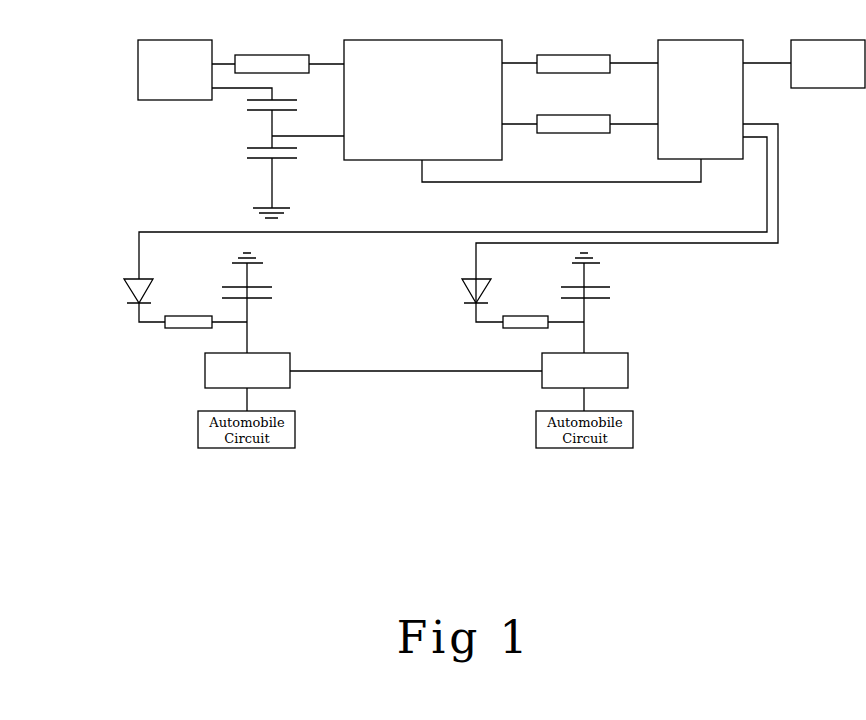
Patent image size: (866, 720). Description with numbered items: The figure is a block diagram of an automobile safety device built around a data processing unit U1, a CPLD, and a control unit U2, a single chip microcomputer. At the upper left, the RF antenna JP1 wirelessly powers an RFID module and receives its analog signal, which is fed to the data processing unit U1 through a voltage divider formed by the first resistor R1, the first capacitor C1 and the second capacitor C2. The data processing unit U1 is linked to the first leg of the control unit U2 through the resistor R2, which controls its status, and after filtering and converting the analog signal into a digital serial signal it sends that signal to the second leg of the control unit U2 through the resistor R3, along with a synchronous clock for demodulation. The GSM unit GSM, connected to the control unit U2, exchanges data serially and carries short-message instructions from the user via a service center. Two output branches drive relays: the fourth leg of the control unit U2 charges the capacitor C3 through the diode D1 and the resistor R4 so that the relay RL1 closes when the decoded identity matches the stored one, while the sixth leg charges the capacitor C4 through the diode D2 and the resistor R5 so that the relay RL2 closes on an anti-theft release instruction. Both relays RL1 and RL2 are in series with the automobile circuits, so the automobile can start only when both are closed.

The RF antenna JP1 is at (175, 70).
The first resistor R1 is at (272, 55).
The first capacitor C1 is at (284, 108).
The second capacitor C2 is at (284, 157).
The data processing unit U1 is at (423, 100).
The resistor R2 is at (573, 55).
The resistor R3 is at (573, 115).
The control unit U2 is at (700, 99).
The GSM unit GSM is at (828, 64).
The diode D1 is at (124, 291).
The resistor R4 is at (188, 313).
The capacitor C3 is at (260, 278).
The relay RL1 is at (247, 370).
The diode D2 is at (462, 291).
The resistor R5 is at (525, 313).
The capacitor C4 is at (598, 278).
The relay RL2 is at (585, 370).